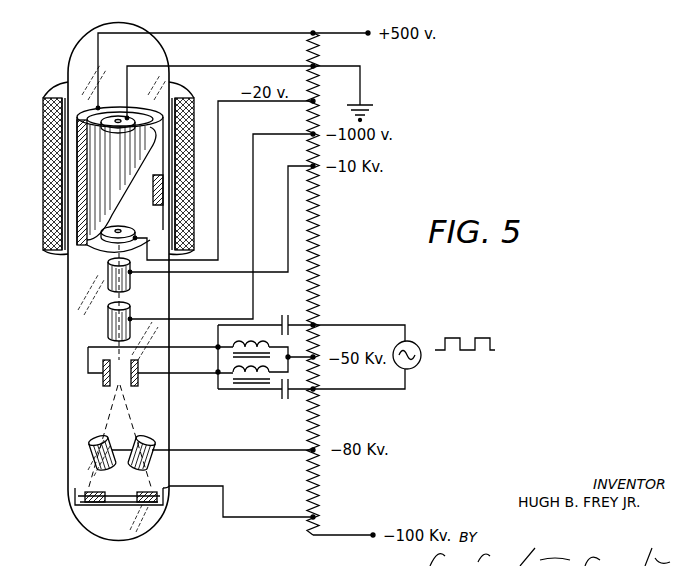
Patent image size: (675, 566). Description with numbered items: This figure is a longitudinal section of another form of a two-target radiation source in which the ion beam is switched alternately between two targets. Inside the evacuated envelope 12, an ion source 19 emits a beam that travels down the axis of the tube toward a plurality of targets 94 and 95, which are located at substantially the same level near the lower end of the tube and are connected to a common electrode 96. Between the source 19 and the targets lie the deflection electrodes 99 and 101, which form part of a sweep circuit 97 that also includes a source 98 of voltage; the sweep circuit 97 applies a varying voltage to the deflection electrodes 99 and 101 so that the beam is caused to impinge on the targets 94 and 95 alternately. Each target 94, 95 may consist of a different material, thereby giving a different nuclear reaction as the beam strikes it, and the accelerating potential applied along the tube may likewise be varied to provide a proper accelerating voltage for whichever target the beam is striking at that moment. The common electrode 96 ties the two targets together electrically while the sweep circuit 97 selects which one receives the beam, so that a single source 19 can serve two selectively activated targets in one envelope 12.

The evacuated tube envelope 12 is at (70, 290).
The source 19 is at (121, 200).
The target 94 is at (84, 492).
The target 95 is at (168, 490).
The common electrode 96 is at (120, 506).
The sweep circuit 97 is at (378, 347).
The source of voltage 98 is at (414, 345).
The deflection electrode 99 is at (103, 375).
The deflection electrode 101 is at (138, 380).